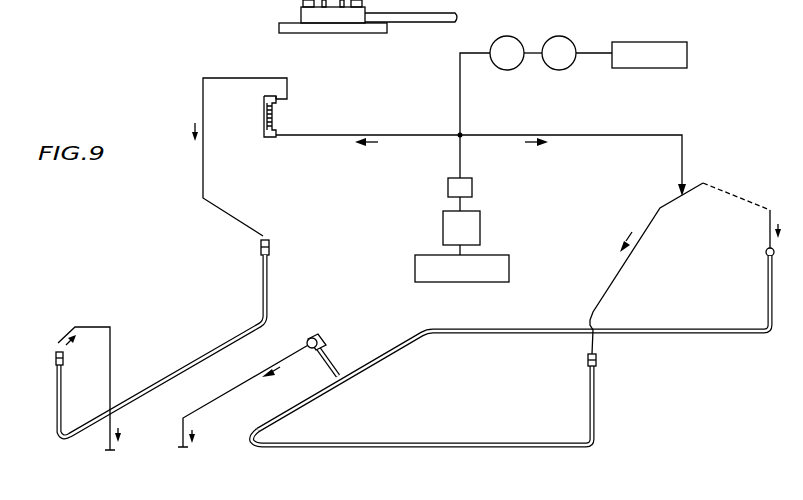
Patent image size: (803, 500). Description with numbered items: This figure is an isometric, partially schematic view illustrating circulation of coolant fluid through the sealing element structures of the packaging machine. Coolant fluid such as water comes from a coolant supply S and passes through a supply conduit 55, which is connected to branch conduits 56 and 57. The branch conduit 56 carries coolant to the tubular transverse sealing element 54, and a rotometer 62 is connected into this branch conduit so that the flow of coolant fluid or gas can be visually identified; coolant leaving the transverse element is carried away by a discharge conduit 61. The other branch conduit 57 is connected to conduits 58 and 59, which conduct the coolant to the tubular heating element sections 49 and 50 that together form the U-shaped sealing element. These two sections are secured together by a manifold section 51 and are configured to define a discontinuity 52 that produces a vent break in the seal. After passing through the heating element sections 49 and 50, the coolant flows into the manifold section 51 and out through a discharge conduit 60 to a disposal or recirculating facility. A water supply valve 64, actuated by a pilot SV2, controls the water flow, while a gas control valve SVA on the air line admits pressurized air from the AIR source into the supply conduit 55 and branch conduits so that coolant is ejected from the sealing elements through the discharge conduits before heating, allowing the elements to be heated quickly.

The heating element section 49 is at (455, 440).
The heating element section 50 is at (512, 330).
The manifold section 51 is at (320, 335).
The discontinuity 52 is at (345, 383).
The transverse sealing element 54 is at (207, 357).
The supply conduit 55 is at (457, 160).
The branch conduit 56 is at (372, 133).
The branch conduit 57 is at (556, 134).
The conduit 58 is at (628, 263).
The conduit 59 is at (742, 200).
The discharge conduit 60 is at (235, 395).
The discharge conduit 61 is at (112, 347).
The rotometer 62 is at (277, 117).
The water supply valve 64 is at (475, 188).
The gas control valve SVA is at (512, 36).
The pilot SV2 is at (481, 225).
The coolant supply S is at (525, 257).